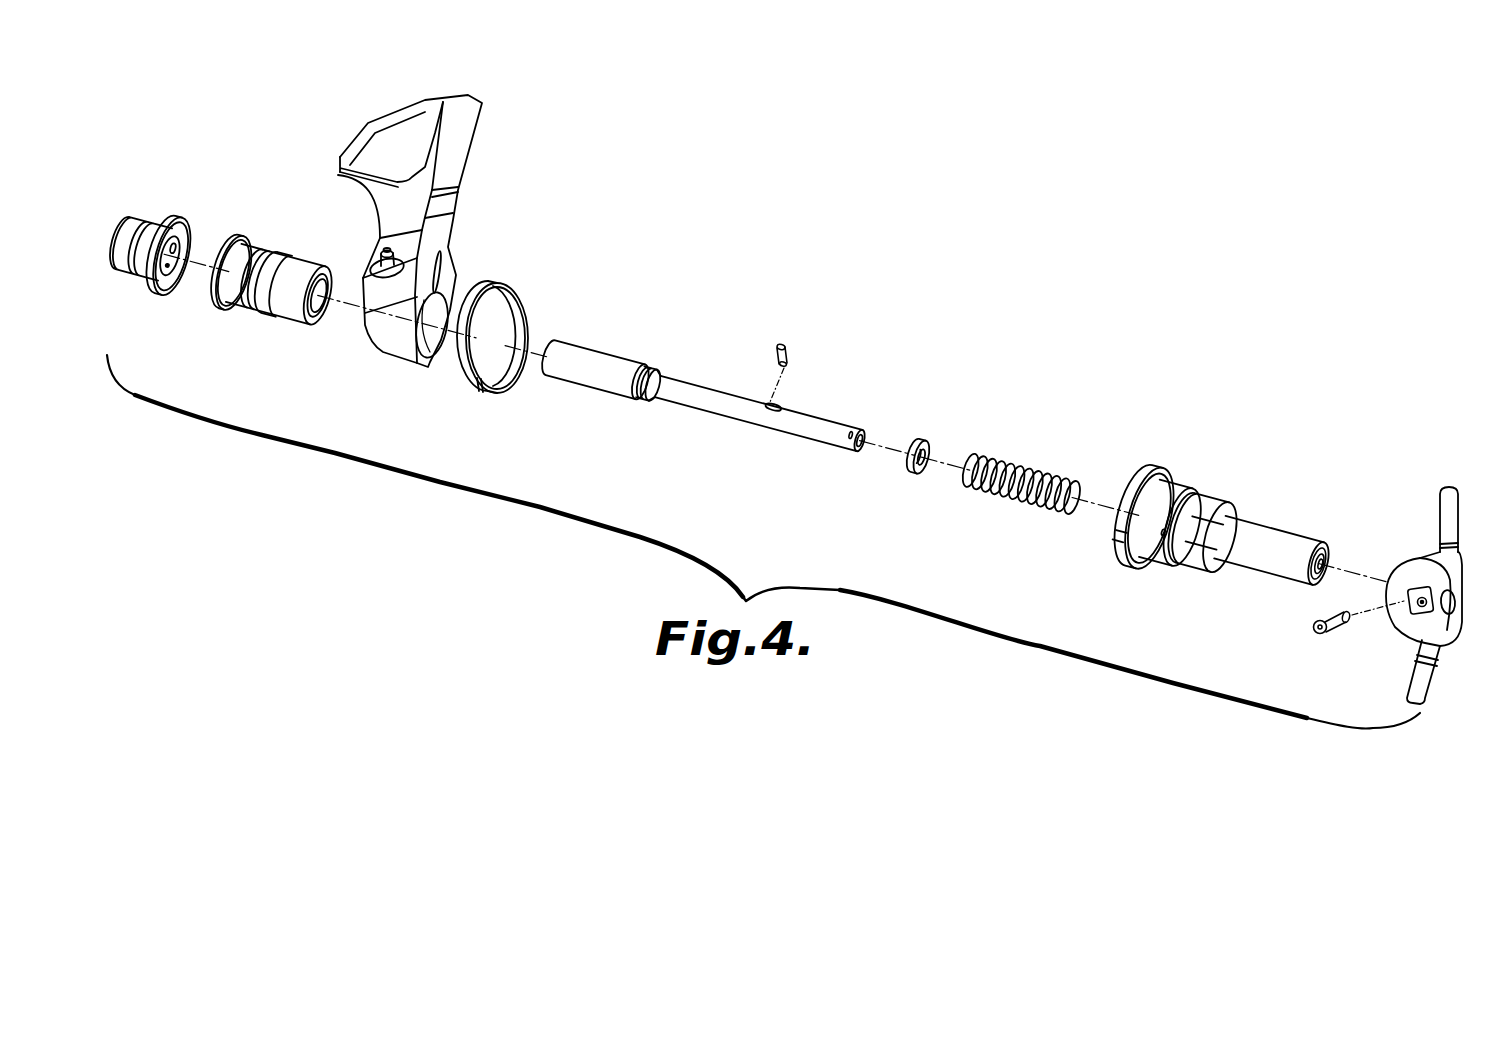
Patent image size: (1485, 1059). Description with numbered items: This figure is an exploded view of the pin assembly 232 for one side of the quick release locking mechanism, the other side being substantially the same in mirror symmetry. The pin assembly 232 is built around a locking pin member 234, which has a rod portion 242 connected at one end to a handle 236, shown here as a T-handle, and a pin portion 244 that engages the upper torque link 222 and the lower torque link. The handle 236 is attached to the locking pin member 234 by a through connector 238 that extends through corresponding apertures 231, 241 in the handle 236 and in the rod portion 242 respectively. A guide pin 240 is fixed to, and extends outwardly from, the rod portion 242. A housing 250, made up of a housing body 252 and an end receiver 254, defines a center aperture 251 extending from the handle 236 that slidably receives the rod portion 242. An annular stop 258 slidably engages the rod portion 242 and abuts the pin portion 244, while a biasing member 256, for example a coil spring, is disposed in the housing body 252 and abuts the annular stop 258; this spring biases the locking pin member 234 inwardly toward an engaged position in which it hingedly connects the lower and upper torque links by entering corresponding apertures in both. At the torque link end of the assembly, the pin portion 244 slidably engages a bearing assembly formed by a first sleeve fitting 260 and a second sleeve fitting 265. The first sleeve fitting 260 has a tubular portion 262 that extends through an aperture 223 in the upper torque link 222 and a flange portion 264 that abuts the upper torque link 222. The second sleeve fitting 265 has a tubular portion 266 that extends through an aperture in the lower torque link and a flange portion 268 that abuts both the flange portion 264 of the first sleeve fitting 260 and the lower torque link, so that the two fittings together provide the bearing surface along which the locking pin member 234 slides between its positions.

The upper torque link 222 is at (426, 258).
The aperture 223 is at (433, 340).
The aperture 231 is at (1420, 604).
The pin assembly 232 is at (777, 399).
The locking pin member 234 is at (703, 411).
The handle 236 is at (1412, 583).
The through connector 238 is at (1312, 624).
The guide pin 240 is at (790, 347).
The aperture 241 is at (843, 441).
The rod portion 242 is at (761, 441).
The pin portion 244 is at (597, 357).
The housing 250 is at (1247, 516).
The center aperture 251 is at (1330, 563).
The housing body 252 is at (1301, 538).
The end receiver 254 is at (502, 288).
The biasing member 256 is at (1023, 470).
The annular stop 258 is at (923, 442).
The first sleeve fitting 260 is at (272, 276).
The tubular portion 262 is at (278, 250).
The flange portion 264 is at (228, 310).
The second sleeve fitting 265 is at (160, 234).
The tubular portion 266 is at (113, 266).
The flange portion 268 is at (172, 217).